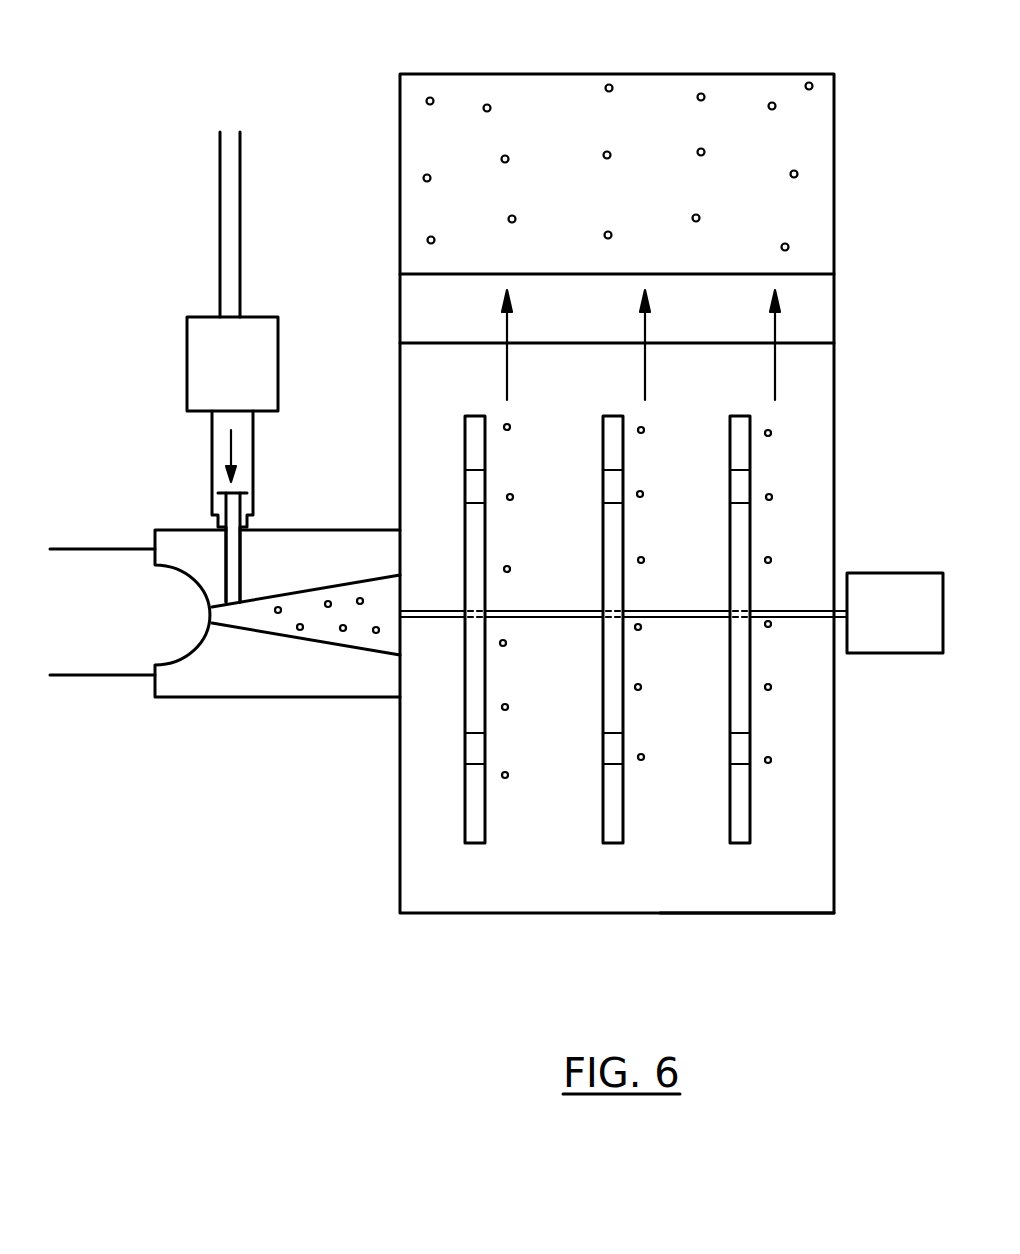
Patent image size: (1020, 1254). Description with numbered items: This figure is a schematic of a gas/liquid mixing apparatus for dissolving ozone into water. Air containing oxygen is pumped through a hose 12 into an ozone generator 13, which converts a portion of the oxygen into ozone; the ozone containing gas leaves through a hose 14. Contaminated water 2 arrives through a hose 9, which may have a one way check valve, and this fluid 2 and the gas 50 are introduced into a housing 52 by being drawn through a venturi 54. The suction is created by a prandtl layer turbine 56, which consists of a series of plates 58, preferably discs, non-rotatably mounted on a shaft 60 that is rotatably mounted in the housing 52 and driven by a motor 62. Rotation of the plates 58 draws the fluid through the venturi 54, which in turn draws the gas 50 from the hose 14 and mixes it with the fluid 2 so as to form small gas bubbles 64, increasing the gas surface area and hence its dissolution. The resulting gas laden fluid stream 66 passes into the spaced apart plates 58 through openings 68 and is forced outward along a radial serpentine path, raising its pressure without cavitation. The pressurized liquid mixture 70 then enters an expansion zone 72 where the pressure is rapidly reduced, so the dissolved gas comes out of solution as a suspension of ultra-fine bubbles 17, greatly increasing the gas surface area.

The contaminated water 2 is at (110, 570).
The hose 9 is at (100, 676).
The hose 12 is at (242, 220).
The ozone generator 13 is at (262, 360).
The hose 14 is at (253, 470).
The bubbles 17 is at (775, 103).
The gas 50 is at (228, 452).
The housing 52 is at (845, 881).
The venturi 54 is at (213, 677).
The prandtl layer turbine 56 is at (740, 932).
The plates 58 is at (742, 465).
The shaft 60 is at (795, 608).
The motor 62 is at (892, 588).
The gas bubbles 64 is at (300, 632).
The gas laden fluid stream 66 is at (388, 632).
The openings 68 is at (608, 760).
The pressurized liquid mixture 70 is at (815, 313).
The expansion zone 72 is at (818, 217).